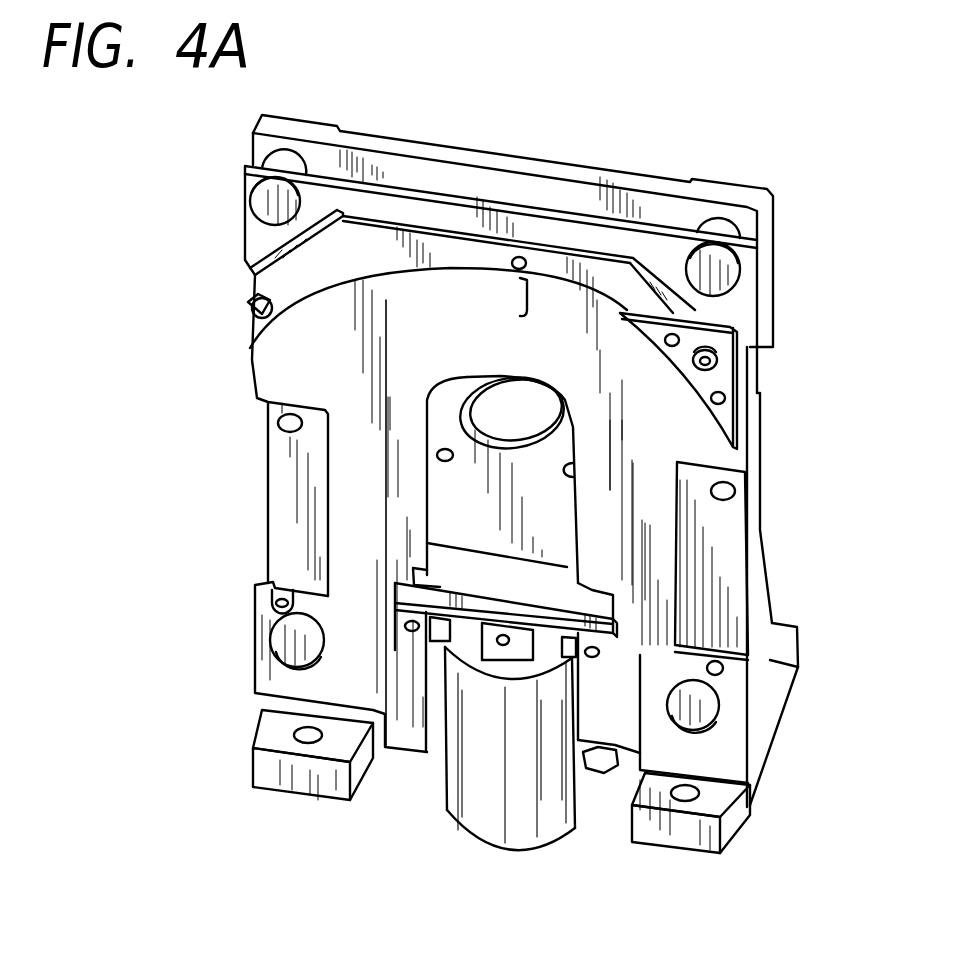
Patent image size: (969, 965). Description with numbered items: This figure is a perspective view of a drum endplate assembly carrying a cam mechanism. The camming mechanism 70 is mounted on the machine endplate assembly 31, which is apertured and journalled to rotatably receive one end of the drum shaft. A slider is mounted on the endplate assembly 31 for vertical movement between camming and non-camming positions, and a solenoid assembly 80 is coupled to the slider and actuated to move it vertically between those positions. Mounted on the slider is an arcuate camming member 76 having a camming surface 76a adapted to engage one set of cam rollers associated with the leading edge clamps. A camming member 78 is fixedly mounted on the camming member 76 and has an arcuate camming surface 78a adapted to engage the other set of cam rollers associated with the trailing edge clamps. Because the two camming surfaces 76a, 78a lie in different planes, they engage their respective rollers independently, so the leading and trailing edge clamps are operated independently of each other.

The camming mechanism 70 is at (806, 236).
The machine endplate assembly 31 is at (792, 653).
The arcuate camming member 76 is at (663, 245).
The camming surface 76a is at (522, 312).
The camming member 78 is at (725, 327).
The arcuate camming surface 78a is at (704, 407).
The solenoid assembly 80 is at (485, 813).